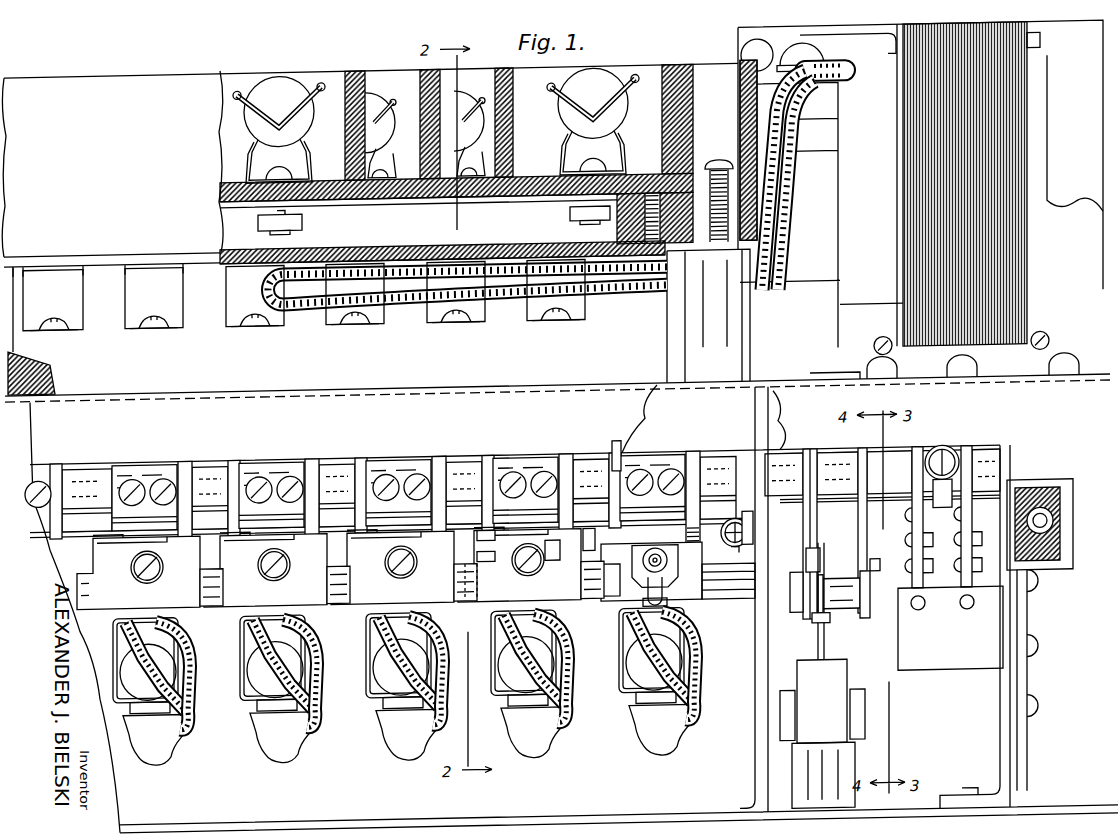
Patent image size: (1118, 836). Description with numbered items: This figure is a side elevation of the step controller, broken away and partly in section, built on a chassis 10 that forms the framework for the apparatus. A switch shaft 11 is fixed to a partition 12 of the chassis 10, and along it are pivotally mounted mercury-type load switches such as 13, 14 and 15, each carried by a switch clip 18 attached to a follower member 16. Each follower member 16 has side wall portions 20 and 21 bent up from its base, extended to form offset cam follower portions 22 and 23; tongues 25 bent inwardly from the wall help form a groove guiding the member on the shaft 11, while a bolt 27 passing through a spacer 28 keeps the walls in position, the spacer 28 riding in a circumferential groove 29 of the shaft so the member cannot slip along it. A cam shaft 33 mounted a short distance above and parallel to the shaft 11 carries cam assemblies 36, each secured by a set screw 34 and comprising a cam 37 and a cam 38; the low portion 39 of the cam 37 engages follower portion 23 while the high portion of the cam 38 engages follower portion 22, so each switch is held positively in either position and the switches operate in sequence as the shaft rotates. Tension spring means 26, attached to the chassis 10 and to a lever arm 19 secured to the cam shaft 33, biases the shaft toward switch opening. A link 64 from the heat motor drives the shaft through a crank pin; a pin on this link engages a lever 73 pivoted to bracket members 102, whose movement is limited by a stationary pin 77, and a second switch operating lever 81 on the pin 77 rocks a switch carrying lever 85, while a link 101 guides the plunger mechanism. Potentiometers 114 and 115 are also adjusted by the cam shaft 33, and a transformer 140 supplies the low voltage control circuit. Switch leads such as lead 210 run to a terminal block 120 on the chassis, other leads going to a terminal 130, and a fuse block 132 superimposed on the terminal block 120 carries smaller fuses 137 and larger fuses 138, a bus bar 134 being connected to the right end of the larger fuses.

The chassis 10 is at (555, 386).
The switch shaft 11 is at (742, 603).
The partition 12 is at (755, 655).
The load switch 13 is at (636, 688).
The load switch 14 is at (512, 690).
The load switch 15 is at (380, 695).
The follower member 16 is at (117, 581).
The switch clip 18 is at (494, 624).
The lever arm 19 is at (721, 534).
The side wall portion 20 is at (548, 550).
The side wall portion 21 is at (477, 556).
The cam follower portion 22 is at (604, 550).
The cam follower portion 23 is at (477, 538).
The tongue 25 is at (477, 574).
The tension spring means 26 is at (751, 540).
The bolt 27 is at (268, 574).
The spacer 28 is at (643, 562).
The circumferential groove 29 is at (690, 606).
The cam shaft 33 is at (82, 470).
The set screw 34 is at (291, 471).
The cam assembly 36 is at (258, 468).
The cam 37 is at (608, 448).
The cam 38 is at (690, 450).
The low portion 39 is at (618, 444).
The link 64 is at (820, 558).
The lever 73 is at (818, 641).
The stationary pin 77 is at (872, 612).
The switch operating lever 81 is at (830, 630).
The switch carrying lever 85 is at (848, 665).
The link 101 is at (812, 582).
The bracket member 102 is at (860, 569).
The potentiometer 114 is at (903, 559).
The potentiometer 115 is at (984, 609).
The terminal block 120 is at (337, 357).
The terminal 130 is at (226, 312).
The fuse block 132 is at (192, 193).
The bus bar 134 is at (432, 201).
The smaller fuse 137 is at (382, 102).
The larger fuse 138 is at (290, 78).
The transformer 140 is at (860, 296).
The lead 210 is at (560, 667).